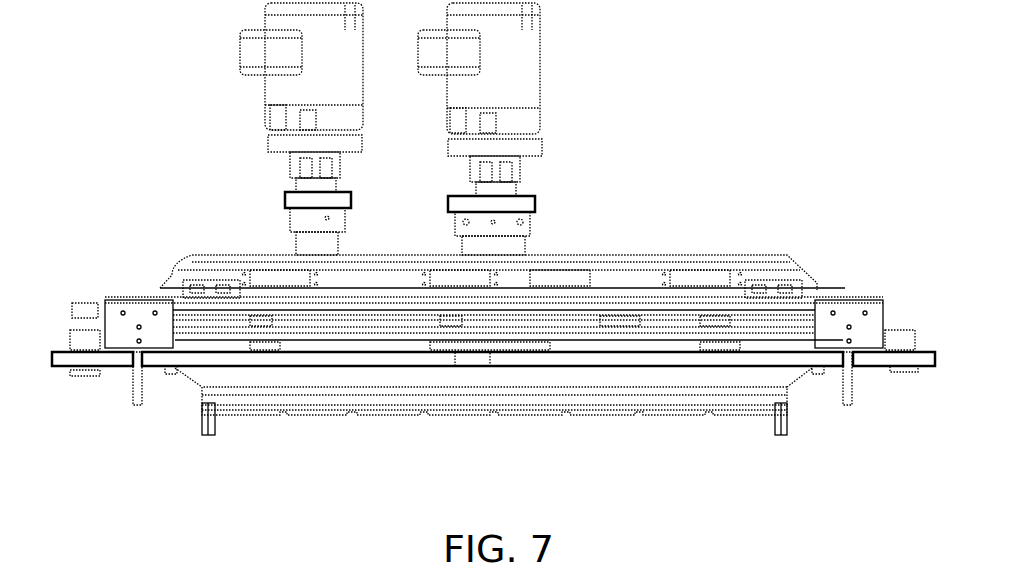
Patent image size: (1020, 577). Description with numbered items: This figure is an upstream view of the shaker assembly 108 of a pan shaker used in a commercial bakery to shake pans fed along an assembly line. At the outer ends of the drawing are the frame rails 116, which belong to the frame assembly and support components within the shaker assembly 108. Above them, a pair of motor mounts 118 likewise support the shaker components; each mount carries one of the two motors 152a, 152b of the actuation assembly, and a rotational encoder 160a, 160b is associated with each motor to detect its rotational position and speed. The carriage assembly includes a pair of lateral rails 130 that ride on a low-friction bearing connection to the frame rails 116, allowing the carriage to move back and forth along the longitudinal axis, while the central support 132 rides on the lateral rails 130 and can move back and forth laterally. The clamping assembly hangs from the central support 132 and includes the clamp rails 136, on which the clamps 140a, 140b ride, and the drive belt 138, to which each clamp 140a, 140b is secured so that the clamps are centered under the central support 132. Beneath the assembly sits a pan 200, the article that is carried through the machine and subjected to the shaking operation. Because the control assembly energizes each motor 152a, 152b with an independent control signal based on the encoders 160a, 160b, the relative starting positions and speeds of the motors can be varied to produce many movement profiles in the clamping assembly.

The shaker assembly 108 is at (754, 116).
The frame rails 116 is at (133, 310).
The motor mounts 118 is at (288, 197).
The lateral rails 130 is at (740, 310).
The central support 132 is at (755, 253).
The clamp rails 136 is at (630, 335).
The drive belt 138 is at (278, 357).
The clamp 140a is at (780, 420).
The clamp 140b is at (207, 420).
The motor 152a is at (512, 60).
The motor 152b is at (268, 55).
The rotational encoder 160a is at (520, 155).
The rotational encoder 160b is at (293, 152).
The pan 200 is at (483, 400).